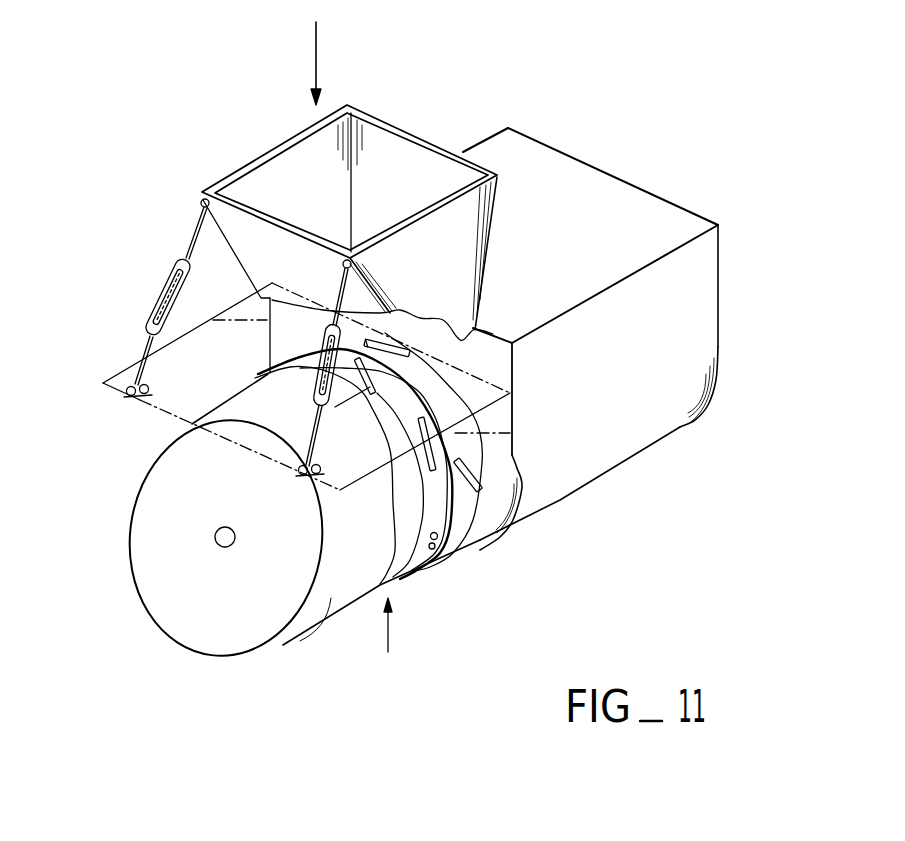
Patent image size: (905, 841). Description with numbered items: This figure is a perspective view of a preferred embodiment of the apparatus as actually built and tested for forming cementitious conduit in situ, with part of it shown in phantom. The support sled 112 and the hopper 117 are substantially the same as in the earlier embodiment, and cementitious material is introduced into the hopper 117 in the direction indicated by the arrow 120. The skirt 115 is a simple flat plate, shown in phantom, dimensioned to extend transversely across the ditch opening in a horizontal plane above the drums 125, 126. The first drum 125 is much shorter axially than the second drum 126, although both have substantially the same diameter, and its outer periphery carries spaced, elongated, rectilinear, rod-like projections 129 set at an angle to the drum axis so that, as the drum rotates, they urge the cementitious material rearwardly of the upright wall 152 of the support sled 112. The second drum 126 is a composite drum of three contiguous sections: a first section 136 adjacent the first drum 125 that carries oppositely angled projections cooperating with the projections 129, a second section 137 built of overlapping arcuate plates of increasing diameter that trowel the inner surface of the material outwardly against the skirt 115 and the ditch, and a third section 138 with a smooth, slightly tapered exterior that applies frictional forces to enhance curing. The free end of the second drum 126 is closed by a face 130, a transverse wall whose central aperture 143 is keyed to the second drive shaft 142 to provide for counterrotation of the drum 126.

The support sled 112 is at (585, 182).
The skirt 115 is at (180, 383).
The hopper 117 is at (353, 110).
The arrow 120 is at (316, 45).
The first drum 125 is at (457, 527).
The second drum 126 is at (378, 635).
The rod-like projections 129 is at (392, 343).
The face 130 is at (158, 567).
The first section 136 is at (432, 530).
The second section 137 is at (280, 373).
The third section 138 is at (326, 613).
The second drive shaft 142 is at (232, 547).
The central aperture 143 is at (218, 527).
The upright wall 152 is at (496, 363).